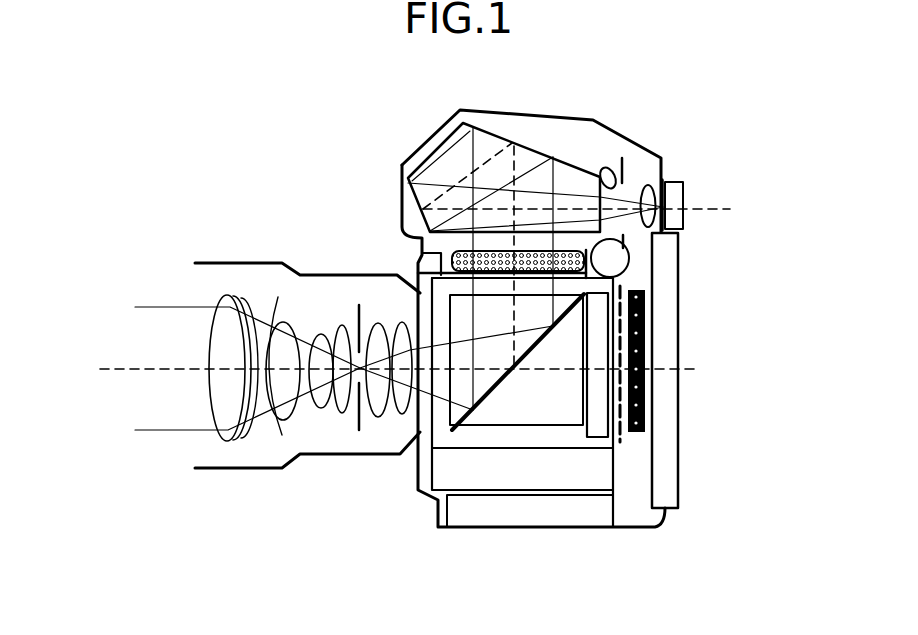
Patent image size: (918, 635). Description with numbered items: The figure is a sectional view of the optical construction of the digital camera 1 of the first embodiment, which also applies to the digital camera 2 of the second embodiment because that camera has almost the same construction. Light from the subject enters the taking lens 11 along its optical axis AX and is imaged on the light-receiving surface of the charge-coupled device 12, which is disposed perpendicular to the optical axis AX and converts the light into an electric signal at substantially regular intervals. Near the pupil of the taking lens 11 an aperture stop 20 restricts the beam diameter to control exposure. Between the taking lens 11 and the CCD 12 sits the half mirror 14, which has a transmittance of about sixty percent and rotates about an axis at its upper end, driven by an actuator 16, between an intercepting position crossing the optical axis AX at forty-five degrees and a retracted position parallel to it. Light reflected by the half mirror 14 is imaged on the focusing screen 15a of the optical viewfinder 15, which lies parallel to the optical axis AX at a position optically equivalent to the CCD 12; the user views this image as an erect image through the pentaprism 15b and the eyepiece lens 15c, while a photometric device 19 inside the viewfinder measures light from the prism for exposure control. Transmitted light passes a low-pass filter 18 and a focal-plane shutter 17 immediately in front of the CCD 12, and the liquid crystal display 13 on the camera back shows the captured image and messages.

The digital camera 1 is at (482, 583).
The digital camera 2 is at (517, 583).
The taking lens 11 is at (277, 448).
The charge-coupled device (CCD) 12 is at (646, 385).
The liquid crystal display (LCD) 13 is at (662, 338).
The half mirror 14 is at (497, 386).
The optical viewfinder 15 is at (540, 140).
The focusing screen 15a is at (453, 250).
The pentaprism 15b is at (430, 153).
The eyepiece lens 15c is at (650, 184).
The actuator 16 is at (629, 259).
The focal-plane shutter 17 is at (623, 444).
The low-pass filter 18 is at (598, 448).
The photometric device 19 is at (612, 170).
The aperture stop 20 is at (362, 422).
The optical axis AX is at (168, 373).